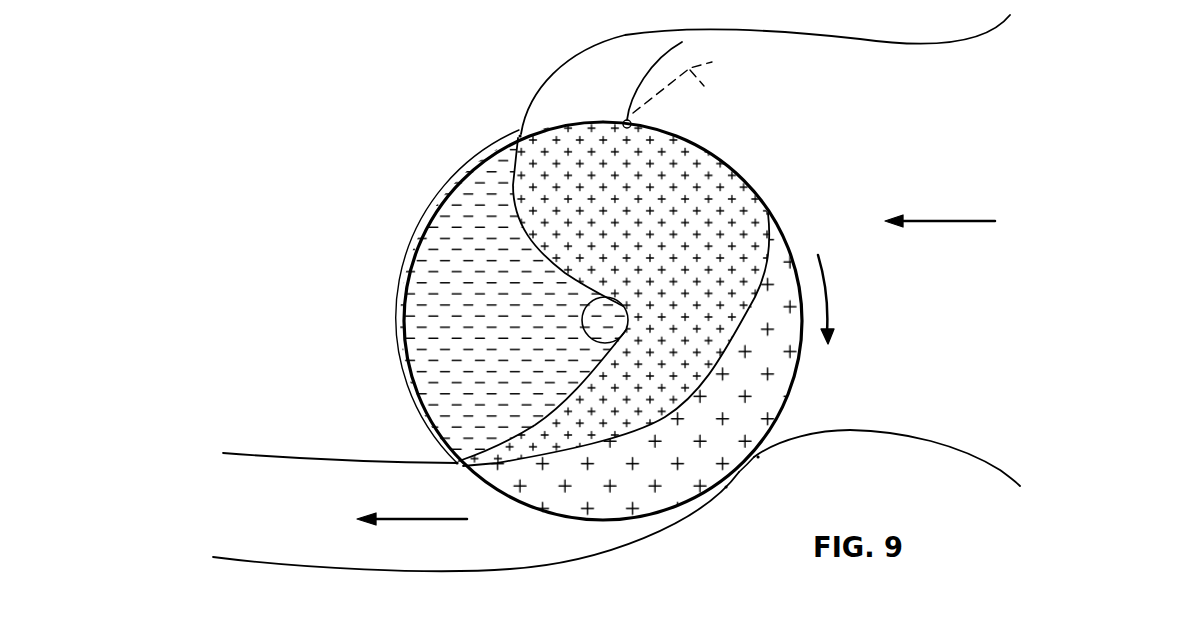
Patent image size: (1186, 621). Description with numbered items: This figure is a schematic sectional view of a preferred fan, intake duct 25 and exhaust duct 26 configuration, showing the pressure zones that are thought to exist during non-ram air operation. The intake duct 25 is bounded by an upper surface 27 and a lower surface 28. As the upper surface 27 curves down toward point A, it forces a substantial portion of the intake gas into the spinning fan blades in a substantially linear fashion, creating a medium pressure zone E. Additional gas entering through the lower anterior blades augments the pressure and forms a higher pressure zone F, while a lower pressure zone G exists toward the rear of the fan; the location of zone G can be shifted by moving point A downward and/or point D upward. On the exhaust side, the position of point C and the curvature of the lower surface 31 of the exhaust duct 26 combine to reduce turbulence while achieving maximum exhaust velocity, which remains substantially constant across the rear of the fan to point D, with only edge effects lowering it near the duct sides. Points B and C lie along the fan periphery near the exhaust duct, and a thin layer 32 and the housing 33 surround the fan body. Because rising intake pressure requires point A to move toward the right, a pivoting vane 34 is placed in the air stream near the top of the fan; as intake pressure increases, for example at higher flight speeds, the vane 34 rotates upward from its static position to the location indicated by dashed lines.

The intake duct 25 is at (905, 136).
The exhaust duct 26 is at (277, 528).
The upper surface 27 is at (890, 40).
The lower surface 28 is at (942, 445).
The lower surface 31 is at (247, 563).
The liquid film on lower right of roller 32 is at (745, 478).
The housing 33 is at (442, 225).
The pivoting vane 34 is at (653, 63).
The point A is at (520, 136).
The point B on roller surface B is at (758, 457).
The point C is at (726, 487).
The point D is at (457, 463).
The medium pressure zone E is at (718, 183).
The higher pressure zone F is at (777, 367).
The lower pressure zone G is at (433, 287).